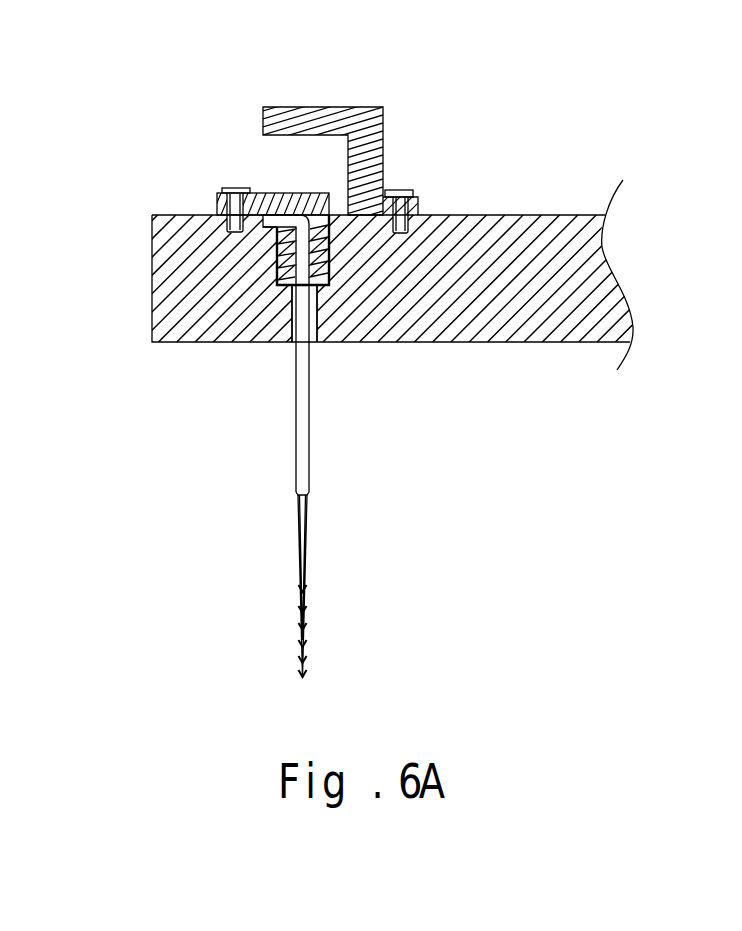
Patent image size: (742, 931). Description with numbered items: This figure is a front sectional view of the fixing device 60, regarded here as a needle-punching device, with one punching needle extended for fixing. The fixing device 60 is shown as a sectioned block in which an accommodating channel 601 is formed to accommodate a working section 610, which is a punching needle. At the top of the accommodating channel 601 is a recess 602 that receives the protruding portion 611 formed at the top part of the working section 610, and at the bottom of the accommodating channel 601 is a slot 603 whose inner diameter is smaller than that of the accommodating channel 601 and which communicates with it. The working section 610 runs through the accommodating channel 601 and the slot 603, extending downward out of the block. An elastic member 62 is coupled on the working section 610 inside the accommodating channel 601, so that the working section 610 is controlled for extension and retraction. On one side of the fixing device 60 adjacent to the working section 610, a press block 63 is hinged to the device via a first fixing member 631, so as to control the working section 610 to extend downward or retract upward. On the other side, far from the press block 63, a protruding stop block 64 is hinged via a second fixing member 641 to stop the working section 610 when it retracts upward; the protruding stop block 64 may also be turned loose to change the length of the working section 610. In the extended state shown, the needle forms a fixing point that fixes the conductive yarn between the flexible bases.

The fixing device 60 is at (502, 178).
The accommodating channel 601 is at (328, 284).
The recess 602 is at (266, 229).
The slot 603 is at (316, 305).
The elastic member 62 is at (280, 267).
The protruding portion 611 is at (268, 212).
The working section 610 is at (302, 570).
The press block 63 is at (273, 223).
The first fixing member 631 is at (232, 190).
The protruding stop block 64 is at (333, 117).
The second fixing member 641 is at (403, 192).